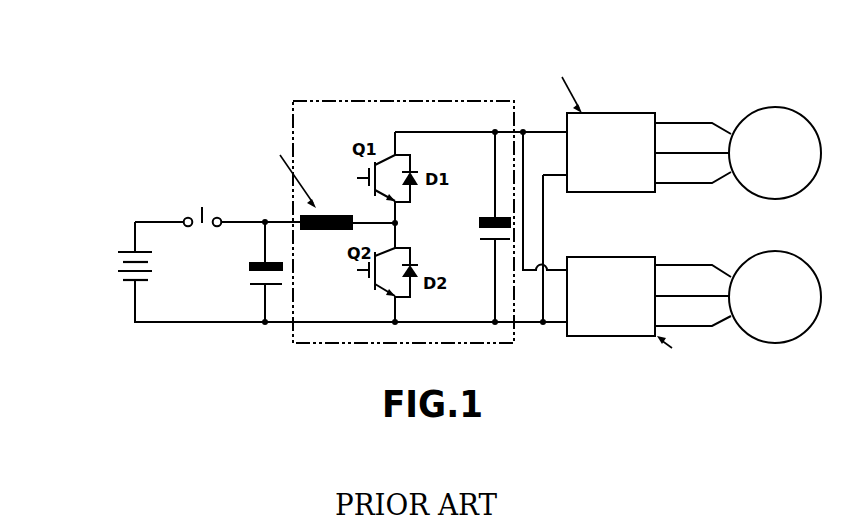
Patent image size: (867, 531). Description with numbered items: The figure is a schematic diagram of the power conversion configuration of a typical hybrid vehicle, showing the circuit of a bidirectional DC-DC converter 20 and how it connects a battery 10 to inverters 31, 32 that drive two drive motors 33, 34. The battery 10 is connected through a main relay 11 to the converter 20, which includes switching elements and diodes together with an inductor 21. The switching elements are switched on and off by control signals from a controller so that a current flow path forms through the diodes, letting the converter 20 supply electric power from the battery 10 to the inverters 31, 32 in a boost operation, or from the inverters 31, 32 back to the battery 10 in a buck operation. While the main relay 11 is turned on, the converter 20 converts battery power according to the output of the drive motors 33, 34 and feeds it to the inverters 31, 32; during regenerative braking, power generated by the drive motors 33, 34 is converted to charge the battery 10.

The battery 10 is at (132, 252).
The main relay 11 is at (207, 226).
The bidirectional DC-DC converter 20 is at (417, 100).
The inductor 21 is at (330, 232).
The inverter 31 is at (612, 113).
The inverter 32 is at (603, 257).
The drive motor 33 is at (783, 108).
The drive motor 34 is at (792, 252).